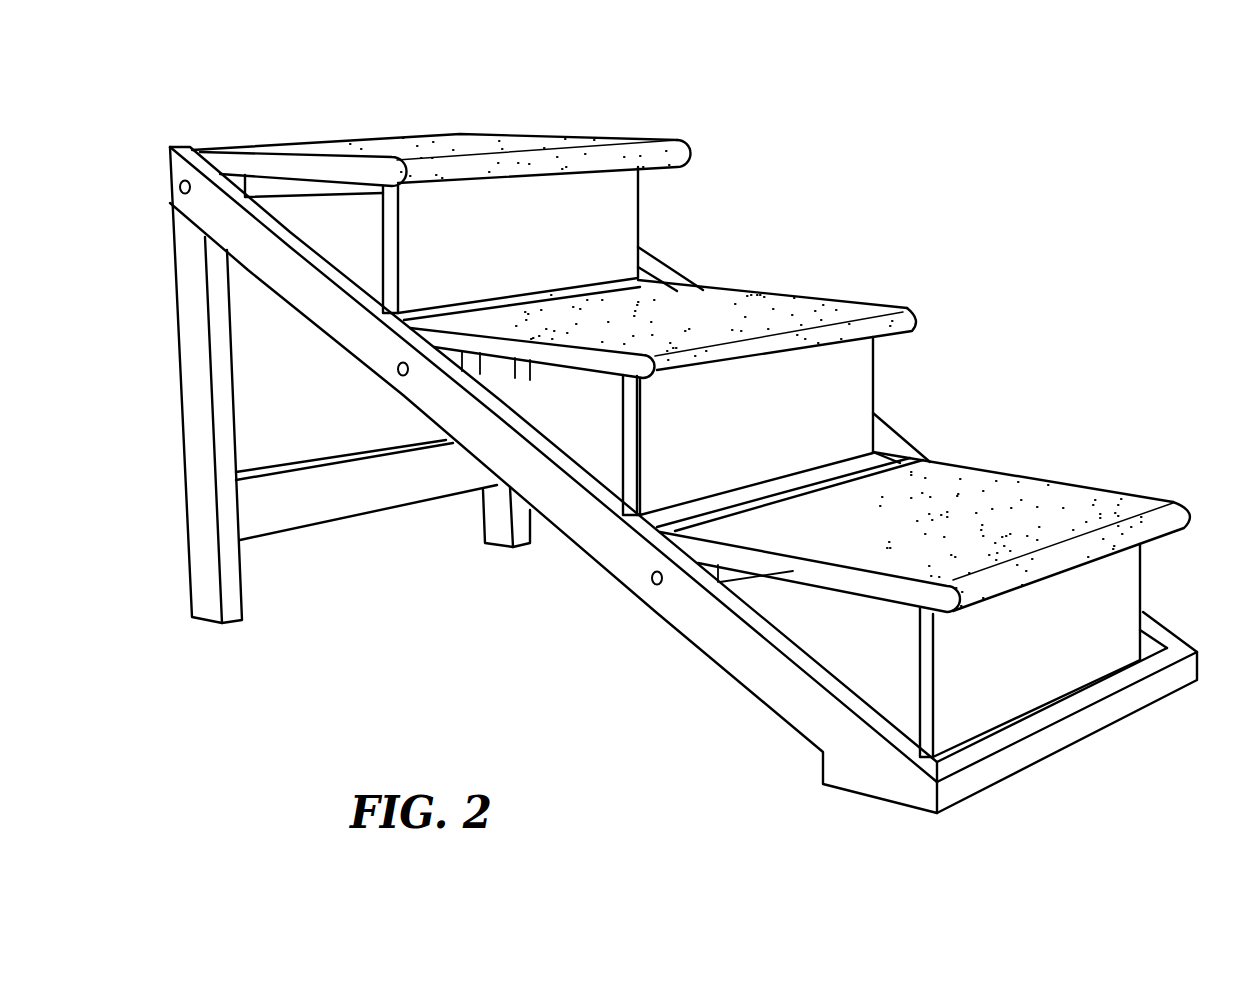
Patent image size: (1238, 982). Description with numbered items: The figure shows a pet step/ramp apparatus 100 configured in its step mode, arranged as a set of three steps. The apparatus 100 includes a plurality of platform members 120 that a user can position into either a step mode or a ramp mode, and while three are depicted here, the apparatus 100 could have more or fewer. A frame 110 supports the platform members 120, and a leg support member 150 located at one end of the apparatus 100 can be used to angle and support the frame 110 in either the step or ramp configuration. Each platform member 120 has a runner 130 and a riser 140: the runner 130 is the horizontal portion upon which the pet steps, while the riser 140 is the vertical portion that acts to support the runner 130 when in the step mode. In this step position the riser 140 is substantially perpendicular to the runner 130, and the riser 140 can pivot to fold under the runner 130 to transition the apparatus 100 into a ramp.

The pet step/ramp apparatus 100 is at (190, 95).
The frame 110 is at (862, 782).
The platform member 120 is at (695, 410).
The runner 130 is at (310, 163).
The riser 140 is at (488, 254).
The leg support member 150 is at (197, 449).